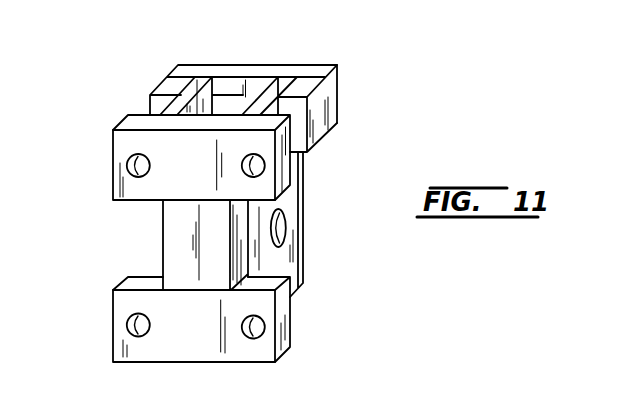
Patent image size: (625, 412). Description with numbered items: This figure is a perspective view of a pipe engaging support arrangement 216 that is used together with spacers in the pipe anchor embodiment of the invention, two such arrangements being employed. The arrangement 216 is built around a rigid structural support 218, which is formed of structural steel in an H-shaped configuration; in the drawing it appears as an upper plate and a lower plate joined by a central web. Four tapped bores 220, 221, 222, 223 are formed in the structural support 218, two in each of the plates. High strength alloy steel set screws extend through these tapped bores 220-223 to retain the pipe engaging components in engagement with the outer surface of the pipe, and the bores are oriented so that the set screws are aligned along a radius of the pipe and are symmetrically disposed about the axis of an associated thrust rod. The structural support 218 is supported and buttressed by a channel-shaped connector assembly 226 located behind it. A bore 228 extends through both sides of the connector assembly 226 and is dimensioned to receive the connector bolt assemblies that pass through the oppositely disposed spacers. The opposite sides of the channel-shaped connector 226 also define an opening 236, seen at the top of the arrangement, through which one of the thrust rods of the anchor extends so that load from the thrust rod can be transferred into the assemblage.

The pipe engaging support arrangement 216 is at (364, 144).
The rigid structural support 218 is at (199, 345).
The tapped bore 220 is at (129, 162).
The tapped bore 221 is at (128, 325).
The tapped bore 222 is at (266, 167).
The tapped bore 223 is at (265, 328).
The channel-shaped connector assembly 226 is at (306, 267).
The bore 228 is at (283, 225).
The opening 236 is at (232, 88).